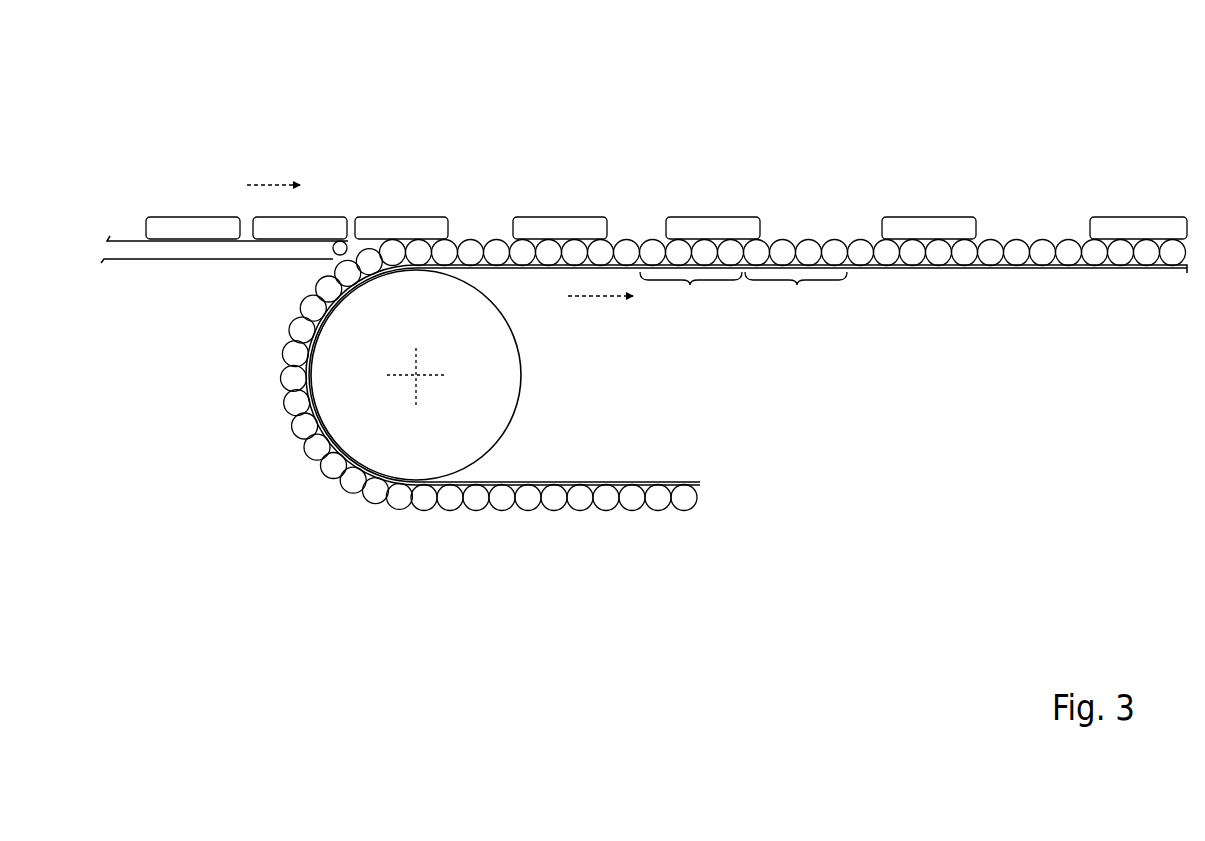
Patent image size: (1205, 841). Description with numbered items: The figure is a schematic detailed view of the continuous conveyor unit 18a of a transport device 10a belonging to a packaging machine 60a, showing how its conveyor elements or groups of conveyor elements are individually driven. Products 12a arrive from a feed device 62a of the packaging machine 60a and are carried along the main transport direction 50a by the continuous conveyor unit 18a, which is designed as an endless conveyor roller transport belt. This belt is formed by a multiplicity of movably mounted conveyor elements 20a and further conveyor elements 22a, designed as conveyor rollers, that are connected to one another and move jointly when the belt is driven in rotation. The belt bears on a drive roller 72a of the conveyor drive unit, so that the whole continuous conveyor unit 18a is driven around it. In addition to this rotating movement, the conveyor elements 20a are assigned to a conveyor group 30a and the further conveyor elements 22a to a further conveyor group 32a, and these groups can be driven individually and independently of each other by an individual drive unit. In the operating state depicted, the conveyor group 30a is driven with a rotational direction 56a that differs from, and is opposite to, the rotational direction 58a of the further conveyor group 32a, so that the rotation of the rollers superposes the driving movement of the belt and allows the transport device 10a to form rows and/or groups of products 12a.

The transport device 10a is at (448, 531).
The product 12a is at (403, 226).
The continuous conveyor unit 18a is at (266, 423).
The conveyor element 20a is at (744, 268).
The further conveyor element 22a is at (752, 269).
The conveyor group 30a is at (690, 285).
The further conveyor group 32a is at (797, 285).
The main transport direction 50a is at (277, 184).
The rotational direction 56a is at (729, 252).
The rotational direction 58a is at (756, 252).
The packaging machine 60a is at (186, 128).
The feed device 62a is at (115, 302).
The drive roller 72a is at (470, 440).